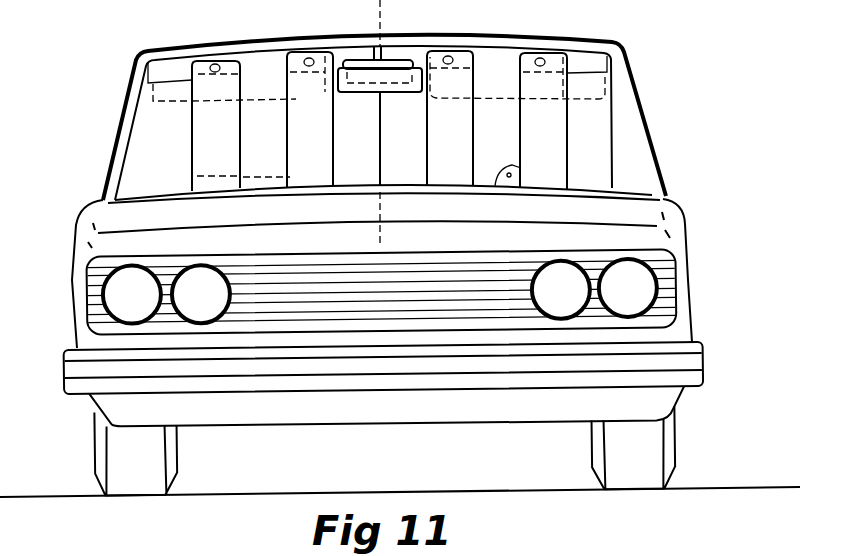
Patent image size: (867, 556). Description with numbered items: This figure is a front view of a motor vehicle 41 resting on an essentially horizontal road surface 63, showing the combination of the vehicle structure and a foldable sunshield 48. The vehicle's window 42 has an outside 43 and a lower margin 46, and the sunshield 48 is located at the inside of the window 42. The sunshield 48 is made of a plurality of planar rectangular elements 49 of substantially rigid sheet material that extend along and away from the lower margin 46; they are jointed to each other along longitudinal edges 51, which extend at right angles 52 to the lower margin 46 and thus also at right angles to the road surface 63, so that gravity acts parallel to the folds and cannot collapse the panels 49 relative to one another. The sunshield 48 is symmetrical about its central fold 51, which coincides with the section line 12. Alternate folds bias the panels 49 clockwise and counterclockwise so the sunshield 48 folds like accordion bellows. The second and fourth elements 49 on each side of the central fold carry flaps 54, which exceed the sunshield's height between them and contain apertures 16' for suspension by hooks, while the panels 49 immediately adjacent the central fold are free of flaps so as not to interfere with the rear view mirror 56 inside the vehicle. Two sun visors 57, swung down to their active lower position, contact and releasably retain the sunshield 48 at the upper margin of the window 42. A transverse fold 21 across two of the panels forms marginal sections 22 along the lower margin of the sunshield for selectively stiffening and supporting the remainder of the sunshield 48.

The section line 12 is at (392, 18).
The apertures 16' is at (523, 99).
The transverse fold 21 is at (232, 176).
The marginal sections 22 is at (200, 187).
The motor vehicle 41 is at (80, 196).
The window 42 is at (160, 133).
The outside of window 43 is at (130, 167).
The lower margin of window 46 is at (412, 163).
The foldable sunshield 48 is at (212, 113).
The planar rectangular elements 49 is at (321, 144).
The longitudinal edges 51 is at (380, 140).
The right angles 52 is at (497, 172).
The flaps 54 is at (215, 62).
The rear view mirror 56 is at (360, 62).
The sun visor 57 is at (277, 103).
The road surface 63 is at (723, 487).